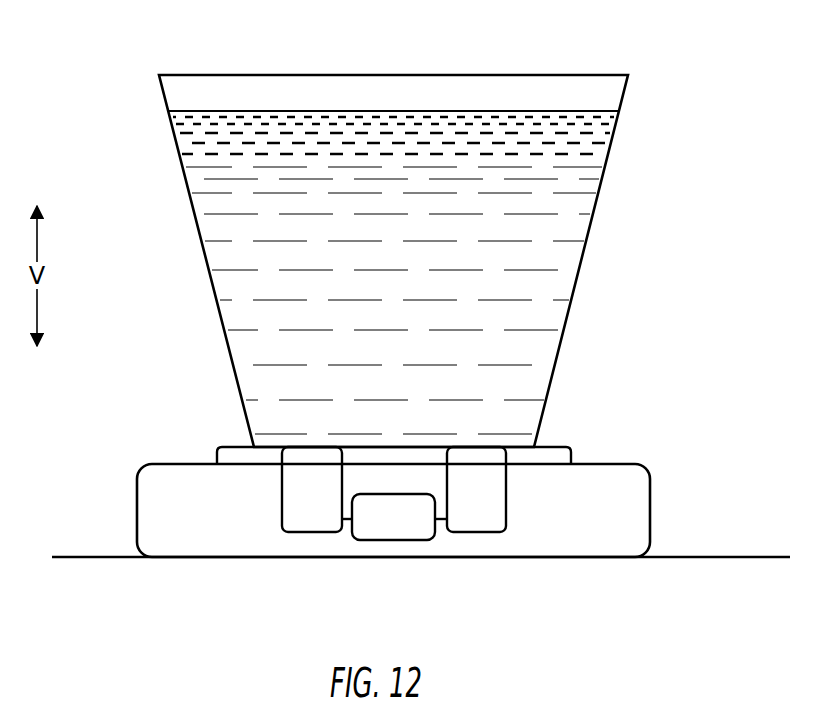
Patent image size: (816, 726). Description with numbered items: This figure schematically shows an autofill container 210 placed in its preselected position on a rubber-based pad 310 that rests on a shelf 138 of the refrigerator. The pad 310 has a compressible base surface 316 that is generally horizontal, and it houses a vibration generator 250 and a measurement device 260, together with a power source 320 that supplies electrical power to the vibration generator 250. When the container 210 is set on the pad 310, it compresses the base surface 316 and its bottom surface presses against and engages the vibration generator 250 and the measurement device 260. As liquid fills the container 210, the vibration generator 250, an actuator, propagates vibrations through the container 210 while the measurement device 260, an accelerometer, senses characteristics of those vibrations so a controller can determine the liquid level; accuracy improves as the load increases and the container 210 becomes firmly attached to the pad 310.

The container 210 is at (600, 185).
The compressible base surface 316 is at (550, 450).
The pad 310 is at (672, 441).
The shelf 138 is at (83, 556).
The vibration generator 250 is at (311, 522).
The power source 320 is at (393, 528).
The measurement device 260 is at (484, 512).